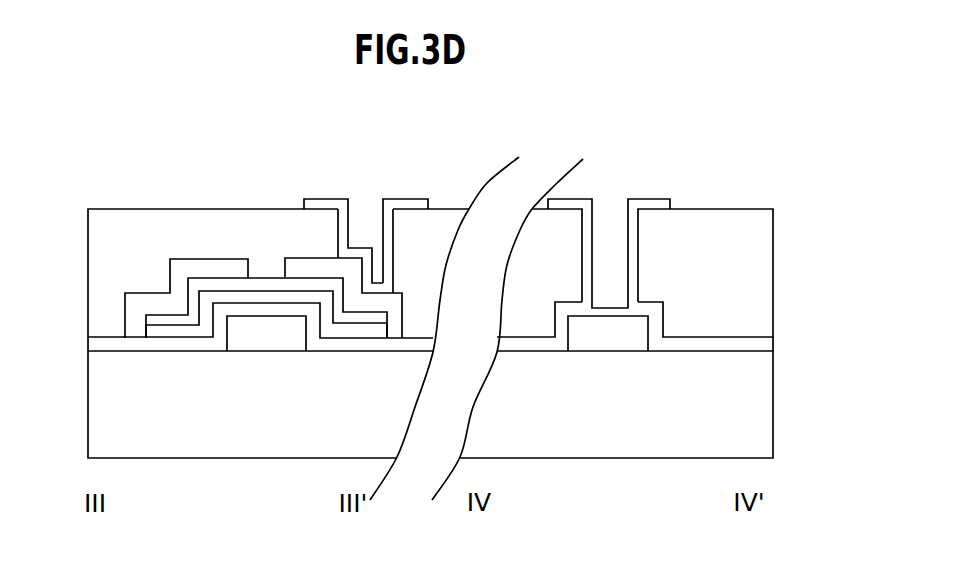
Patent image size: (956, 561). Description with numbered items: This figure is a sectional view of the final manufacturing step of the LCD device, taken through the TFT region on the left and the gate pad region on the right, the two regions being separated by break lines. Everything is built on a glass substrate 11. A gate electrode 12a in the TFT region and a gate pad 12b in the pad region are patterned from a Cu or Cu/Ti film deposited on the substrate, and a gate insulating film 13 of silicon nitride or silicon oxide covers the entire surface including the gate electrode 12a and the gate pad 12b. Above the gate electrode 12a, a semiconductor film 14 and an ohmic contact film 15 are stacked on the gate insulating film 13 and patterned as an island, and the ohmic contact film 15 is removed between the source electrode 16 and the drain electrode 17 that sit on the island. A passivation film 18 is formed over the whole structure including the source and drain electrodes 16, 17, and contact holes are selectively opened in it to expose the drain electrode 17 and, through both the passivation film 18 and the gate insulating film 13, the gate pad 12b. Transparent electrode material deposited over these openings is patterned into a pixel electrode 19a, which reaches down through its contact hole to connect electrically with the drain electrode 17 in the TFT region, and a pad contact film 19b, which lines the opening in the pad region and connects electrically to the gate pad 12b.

The glass substrate 11 is at (88, 405).
The gate electrode 12a is at (265, 343).
The gate pad 12b is at (610, 328).
The gate insulating film 13 is at (88, 343).
The semiconductor film 14 is at (152, 327).
The ohmic contact film 15 is at (150, 316).
The source electrode 16 is at (206, 266).
The drain electrode 17 is at (295, 268).
The passivation film 18 is at (88, 255).
The pixel electrode 19a is at (405, 199).
The pad contact film 19b is at (650, 199).